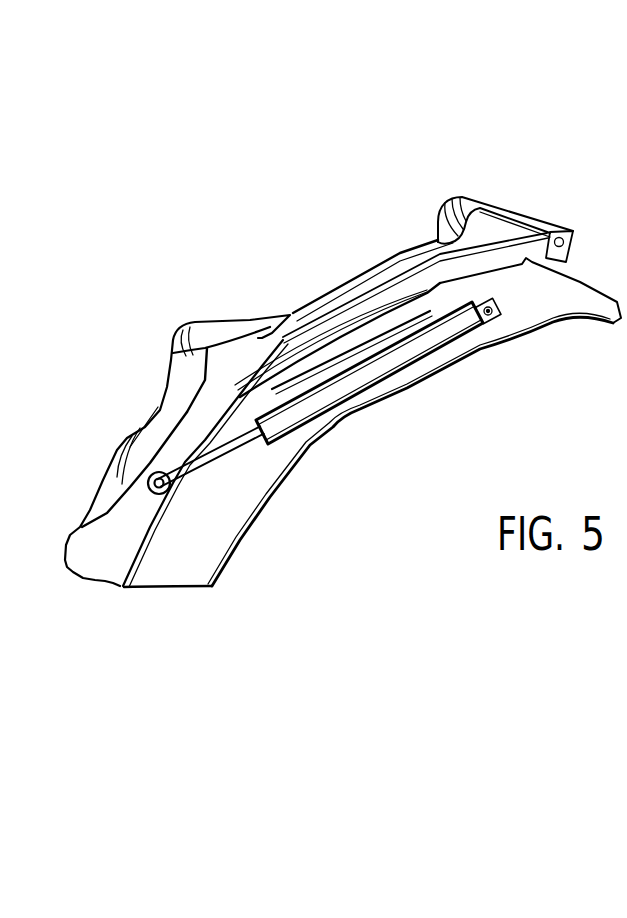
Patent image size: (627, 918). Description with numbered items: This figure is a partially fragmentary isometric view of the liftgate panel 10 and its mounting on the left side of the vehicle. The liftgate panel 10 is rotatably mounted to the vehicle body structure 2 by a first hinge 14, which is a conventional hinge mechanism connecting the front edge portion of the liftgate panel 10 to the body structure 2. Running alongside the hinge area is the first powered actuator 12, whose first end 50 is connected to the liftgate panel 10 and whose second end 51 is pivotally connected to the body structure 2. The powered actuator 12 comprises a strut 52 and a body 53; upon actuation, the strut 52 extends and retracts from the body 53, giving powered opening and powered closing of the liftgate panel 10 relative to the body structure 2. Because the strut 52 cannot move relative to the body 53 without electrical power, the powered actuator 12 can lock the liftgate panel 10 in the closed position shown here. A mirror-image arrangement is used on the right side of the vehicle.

The body structure 2 is at (477, 297).
The liftgate panel 10 is at (102, 482).
The first powered actuator 12 is at (363, 442).
The first hinge 14 is at (563, 228).
The first end 50 is at (168, 491).
The second end 51 is at (490, 316).
The strut 52 is at (235, 452).
The body 53 is at (399, 368).